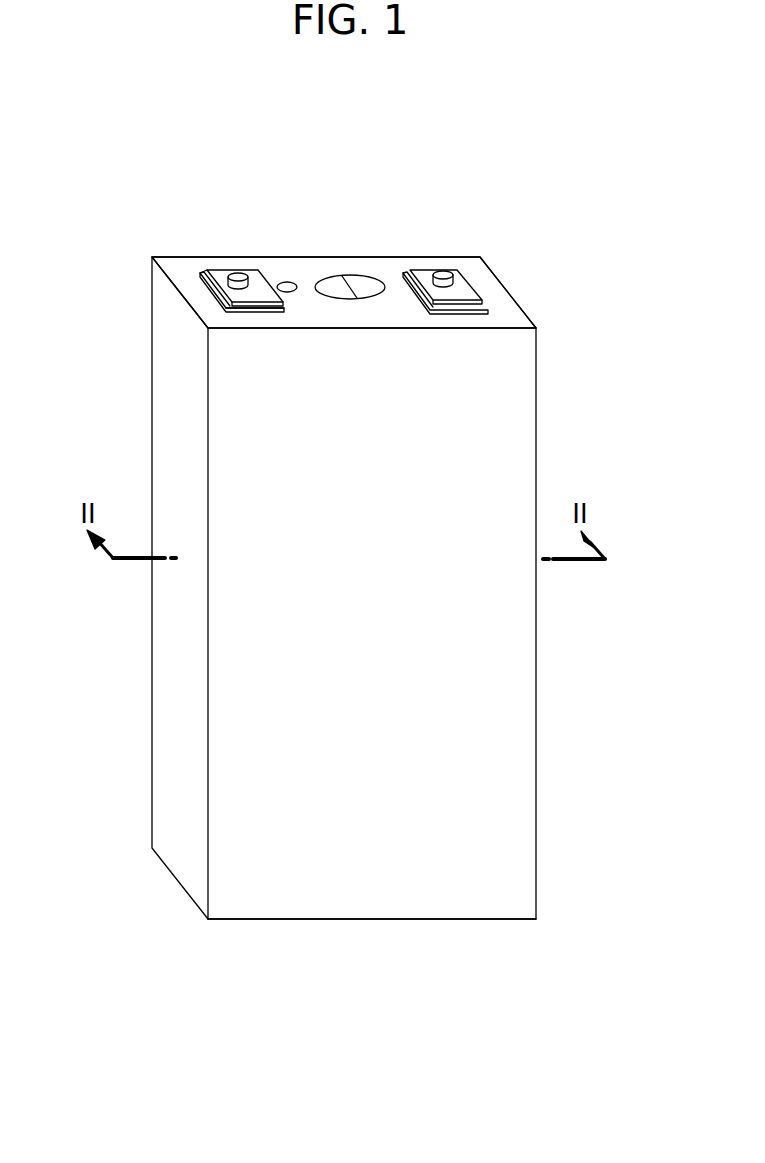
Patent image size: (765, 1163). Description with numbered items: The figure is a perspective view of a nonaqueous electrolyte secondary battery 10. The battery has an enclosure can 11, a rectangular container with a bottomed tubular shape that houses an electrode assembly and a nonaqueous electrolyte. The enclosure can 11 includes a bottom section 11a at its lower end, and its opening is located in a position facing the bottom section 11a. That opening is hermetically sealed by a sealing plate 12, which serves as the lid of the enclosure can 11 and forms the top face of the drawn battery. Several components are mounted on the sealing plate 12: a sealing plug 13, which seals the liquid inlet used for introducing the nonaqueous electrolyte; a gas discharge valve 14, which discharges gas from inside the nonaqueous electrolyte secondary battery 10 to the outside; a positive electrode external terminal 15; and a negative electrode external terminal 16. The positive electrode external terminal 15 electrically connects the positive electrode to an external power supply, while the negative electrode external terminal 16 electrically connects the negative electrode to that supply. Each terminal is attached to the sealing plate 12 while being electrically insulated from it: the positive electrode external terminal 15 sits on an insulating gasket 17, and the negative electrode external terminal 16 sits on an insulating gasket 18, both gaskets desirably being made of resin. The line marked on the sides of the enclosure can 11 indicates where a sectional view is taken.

The nonaqueous electrolyte secondary battery 10 is at (435, 142).
The enclosure can 11 is at (172, 478).
The bottom section 11a is at (345, 920).
The sealing plate 12 is at (180, 264).
The sealing plug 13 is at (287, 282).
The gas discharge valve 14 is at (358, 282).
The positive electrode external terminal 15 is at (237, 276).
The negative electrode external terminal 16 is at (462, 283).
The insulating gasket 17 is at (217, 293).
The insulating gasket 18 is at (485, 308).